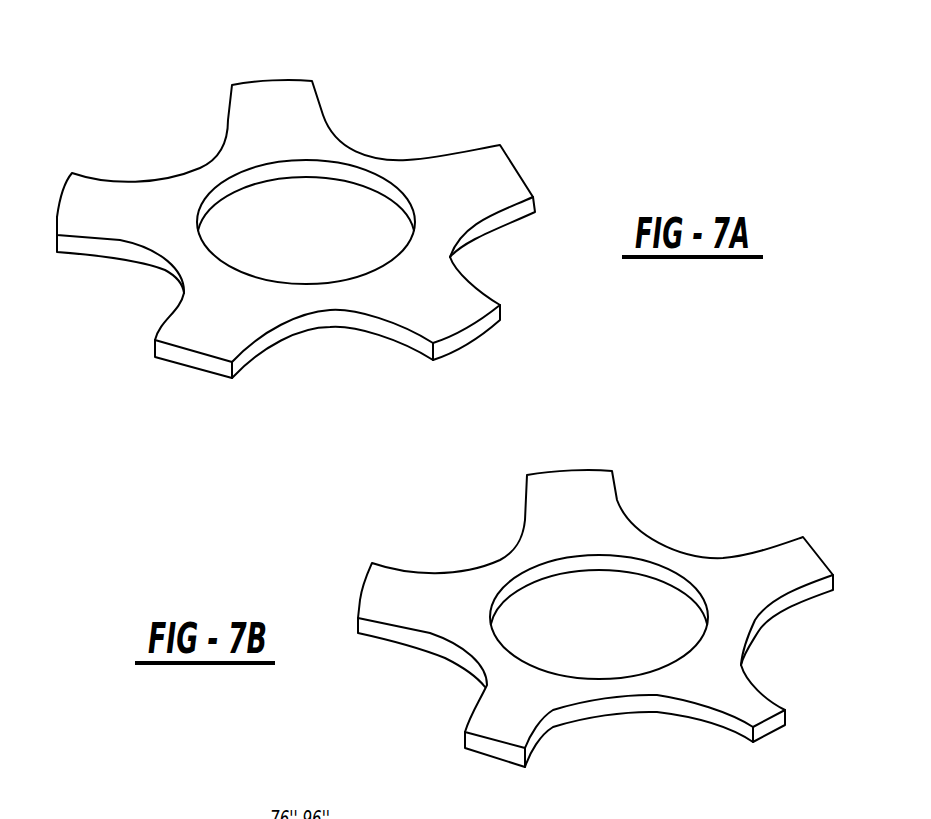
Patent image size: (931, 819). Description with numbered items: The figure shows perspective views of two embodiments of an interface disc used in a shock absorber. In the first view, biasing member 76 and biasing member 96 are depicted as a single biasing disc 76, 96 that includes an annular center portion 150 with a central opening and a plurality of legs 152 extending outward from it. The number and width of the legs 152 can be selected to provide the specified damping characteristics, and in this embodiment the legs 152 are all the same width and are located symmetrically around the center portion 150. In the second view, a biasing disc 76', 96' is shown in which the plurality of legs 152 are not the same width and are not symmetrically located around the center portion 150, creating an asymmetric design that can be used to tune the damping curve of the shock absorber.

In FIG. 7A, the biasing member 76 is at (333, 219).
In FIG. 7B, the biasing member 76 is at (598, 623).
In FIG. 7A, the biasing member 96 is at (333, 219).
In FIG. 7B, the biasing member 96 is at (598, 623).
In FIG. 7B, the biasing disc 76' is at (598, 623).
In FIG. 7B, the biasing disc 96' is at (598, 623).
In FIG. 7A, the annular center portion 150 is at (325, 295).
In FIG. 7B, the annular center portion 150 is at (598, 688).
In FIG. 7A, the legs 152 is at (492, 175).
In FIG. 7B, the legs 152 is at (770, 720).